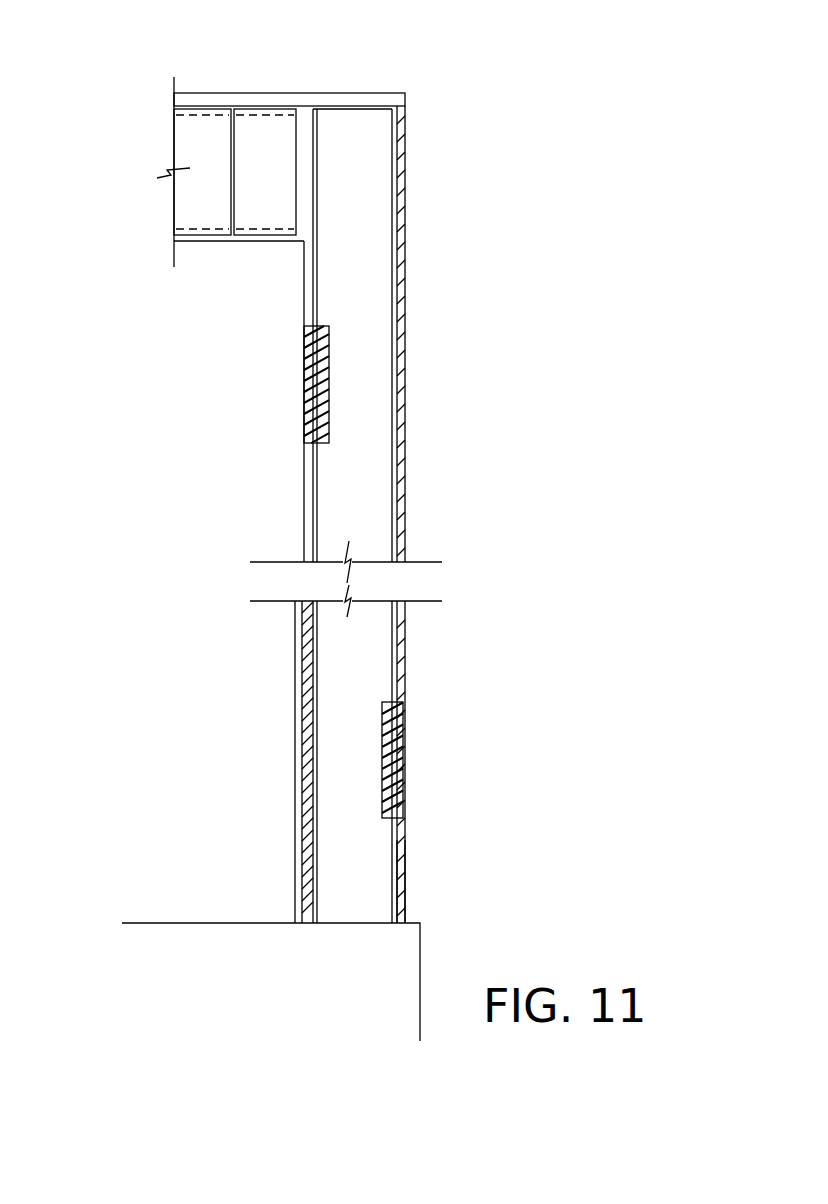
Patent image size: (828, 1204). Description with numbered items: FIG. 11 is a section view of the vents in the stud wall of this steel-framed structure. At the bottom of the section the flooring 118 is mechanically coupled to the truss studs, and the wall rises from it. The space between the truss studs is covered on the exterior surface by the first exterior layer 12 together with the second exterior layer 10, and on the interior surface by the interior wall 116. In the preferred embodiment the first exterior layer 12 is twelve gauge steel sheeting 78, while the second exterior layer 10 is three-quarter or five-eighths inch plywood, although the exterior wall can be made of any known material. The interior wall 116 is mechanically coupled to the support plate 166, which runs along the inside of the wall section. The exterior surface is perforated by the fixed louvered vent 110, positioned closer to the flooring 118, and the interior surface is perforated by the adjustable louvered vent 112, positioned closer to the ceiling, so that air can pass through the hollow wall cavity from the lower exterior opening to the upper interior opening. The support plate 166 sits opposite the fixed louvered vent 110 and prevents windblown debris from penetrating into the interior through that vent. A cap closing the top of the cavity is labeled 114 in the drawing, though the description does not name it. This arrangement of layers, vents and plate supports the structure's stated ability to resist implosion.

The steel sheeting 78 is at (237, 92).
The top cap 114 is at (368, 93).
The interior wall 116 is at (307, 283).
The first exterior layer 12 is at (398, 313).
The adjustable louvered vent 112 is at (305, 415).
The support plate 166 is at (305, 697).
The fixed louvered vent 110 is at (402, 749).
The second exterior layer 10 is at (402, 897).
The flooring 118 is at (212, 921).